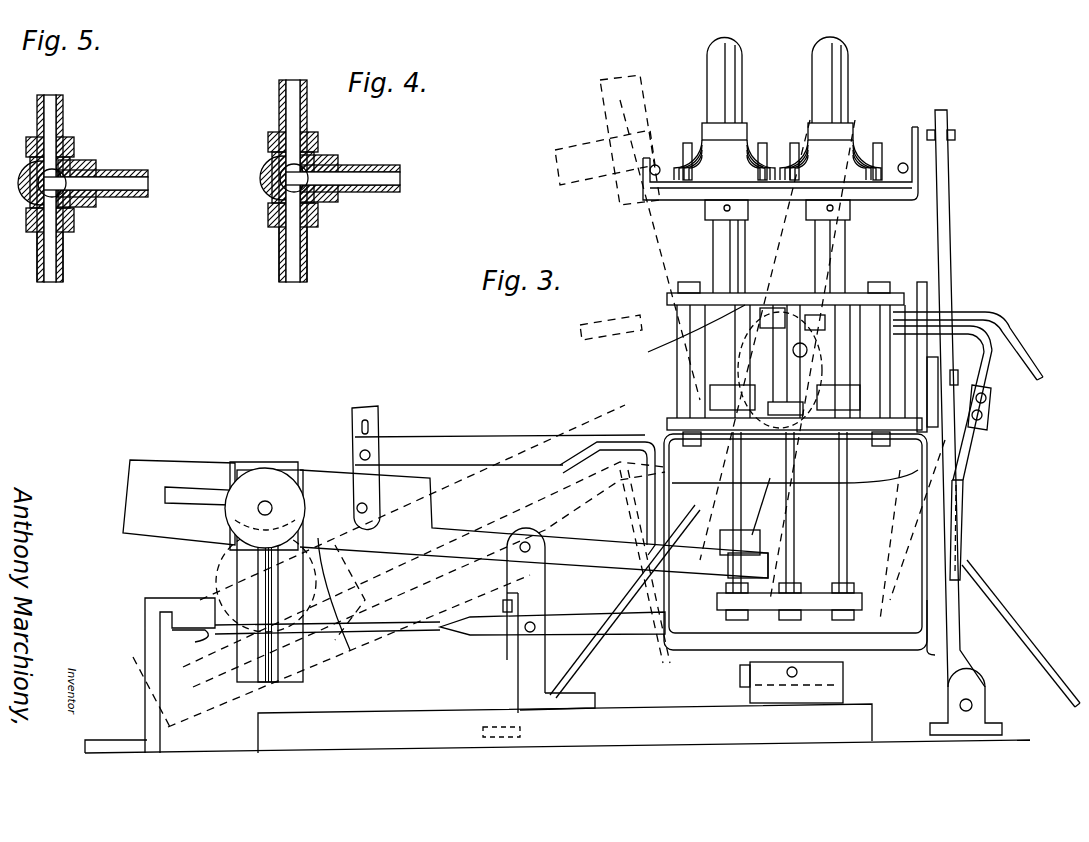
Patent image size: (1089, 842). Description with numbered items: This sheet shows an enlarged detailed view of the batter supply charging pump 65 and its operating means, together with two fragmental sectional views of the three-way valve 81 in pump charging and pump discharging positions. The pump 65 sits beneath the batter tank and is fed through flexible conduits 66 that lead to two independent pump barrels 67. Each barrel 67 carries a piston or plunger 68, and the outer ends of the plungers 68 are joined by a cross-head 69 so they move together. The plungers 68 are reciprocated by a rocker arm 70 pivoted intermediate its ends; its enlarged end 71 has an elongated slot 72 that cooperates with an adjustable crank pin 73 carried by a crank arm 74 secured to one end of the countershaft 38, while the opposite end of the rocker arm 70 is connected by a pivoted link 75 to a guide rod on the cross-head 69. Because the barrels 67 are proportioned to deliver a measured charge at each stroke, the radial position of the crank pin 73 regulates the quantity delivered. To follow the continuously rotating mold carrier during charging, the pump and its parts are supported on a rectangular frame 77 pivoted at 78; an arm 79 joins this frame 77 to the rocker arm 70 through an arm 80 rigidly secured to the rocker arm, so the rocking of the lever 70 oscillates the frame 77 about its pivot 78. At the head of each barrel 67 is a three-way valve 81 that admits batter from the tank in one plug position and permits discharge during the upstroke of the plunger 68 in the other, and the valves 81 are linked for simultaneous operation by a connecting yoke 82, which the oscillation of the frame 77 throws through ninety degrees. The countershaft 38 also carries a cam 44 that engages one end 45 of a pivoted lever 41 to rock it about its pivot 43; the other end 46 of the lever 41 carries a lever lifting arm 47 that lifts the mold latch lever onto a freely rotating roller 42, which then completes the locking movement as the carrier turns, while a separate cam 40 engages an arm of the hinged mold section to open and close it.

In FIG. 3, the countershaft 38 is at (258, 565).
In FIG. 3, the cam 40 is at (1010, 345).
In FIG. 3, the pivoted lever 41 is at (580, 618).
In FIG. 3, the freely rotating wheel or roller 42 is at (720, 366).
In FIG. 3, the pivot 43 is at (527, 630).
In FIG. 3, the cam 44 is at (338, 601).
In FIG. 3, the end of the lever 45 is at (160, 641).
In FIG. 3, the other end of the rocking lever 46 is at (968, 472).
In FIG. 3, the lever lifting arm 47 is at (988, 362).
In FIG. 3, the charging pump 65 is at (915, 248).
In FIG. 5, the flexible conduits 66 is at (50, 108).
In FIG. 4, the flexible conduits 66 is at (268, 181).
In FIG. 3, the flexible conduits 66 is at (822, 62).
In FIG. 5, the pump barrels 67 is at (52, 252).
In FIG. 4, the pump barrels 67 is at (313, 254).
In FIG. 3, the pump barrels 67 is at (825, 244).
In FIG. 3, the pistons or plungers 68 is at (843, 517).
In FIG. 3, the cross-head 69 is at (802, 596).
In FIG. 3, the rocker arm 70 is at (490, 532).
In FIG. 3, the enlarged end of the rocker arm 71 is at (160, 470).
In FIG. 3, the elongated slot 72 is at (197, 496).
In FIG. 3, the adjustable crank pin 73 is at (262, 478).
In FIG. 3, the crank arm 74 is at (292, 460).
In FIG. 3, the pivoted link 75 is at (775, 476).
In FIG. 3, the rectangular frame 77 is at (920, 652).
In FIG. 3, the pivot 78 is at (792, 678).
In FIG. 3, the arm 79 is at (538, 437).
In FIG. 3, the arm 80 is at (380, 418).
In FIG. 5, the three-way valve 81 is at (72, 160).
In FIG. 4, the three-way valve 81 is at (330, 181).
In FIG. 3, the three-way valve 81 is at (777, 160).
In FIG. 3, the connecting yoke 82 is at (897, 195).